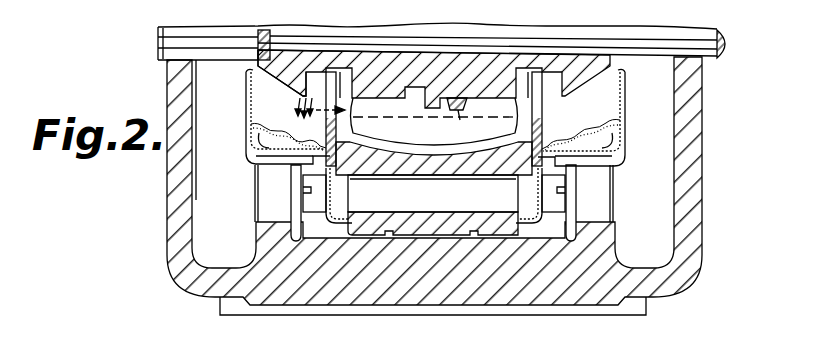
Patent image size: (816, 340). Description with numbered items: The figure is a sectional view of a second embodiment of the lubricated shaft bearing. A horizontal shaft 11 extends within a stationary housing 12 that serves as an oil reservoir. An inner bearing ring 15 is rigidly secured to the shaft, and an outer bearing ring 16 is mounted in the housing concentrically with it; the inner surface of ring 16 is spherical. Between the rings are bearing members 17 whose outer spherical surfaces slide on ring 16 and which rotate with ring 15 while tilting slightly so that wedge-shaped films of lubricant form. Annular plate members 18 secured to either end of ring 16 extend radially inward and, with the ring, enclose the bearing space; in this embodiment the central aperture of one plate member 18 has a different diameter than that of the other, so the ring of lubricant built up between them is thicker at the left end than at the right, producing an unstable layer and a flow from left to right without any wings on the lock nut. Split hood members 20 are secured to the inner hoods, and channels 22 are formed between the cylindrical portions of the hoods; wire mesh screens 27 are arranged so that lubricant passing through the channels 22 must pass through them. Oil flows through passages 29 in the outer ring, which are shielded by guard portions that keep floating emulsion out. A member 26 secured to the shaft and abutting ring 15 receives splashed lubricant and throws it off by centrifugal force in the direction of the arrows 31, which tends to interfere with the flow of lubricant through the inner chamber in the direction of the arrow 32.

The horizontal shaft 11 is at (158, 40).
The housing 12 is at (176, 193).
The inner bearing ring 15 is at (379, 62).
The outer bearing ring 16 is at (451, 169).
The bearing members 17 is at (434, 121).
The annular plate members 18 is at (312, 184).
The hood members 20 is at (290, 168).
The channels 22 is at (274, 163).
The member 26 is at (294, 64).
The wire mesh screen 27 is at (594, 138).
The passages 29 is at (433, 193).
The arrows 31 is at (297, 104).
The arrow 32 is at (288, 136).